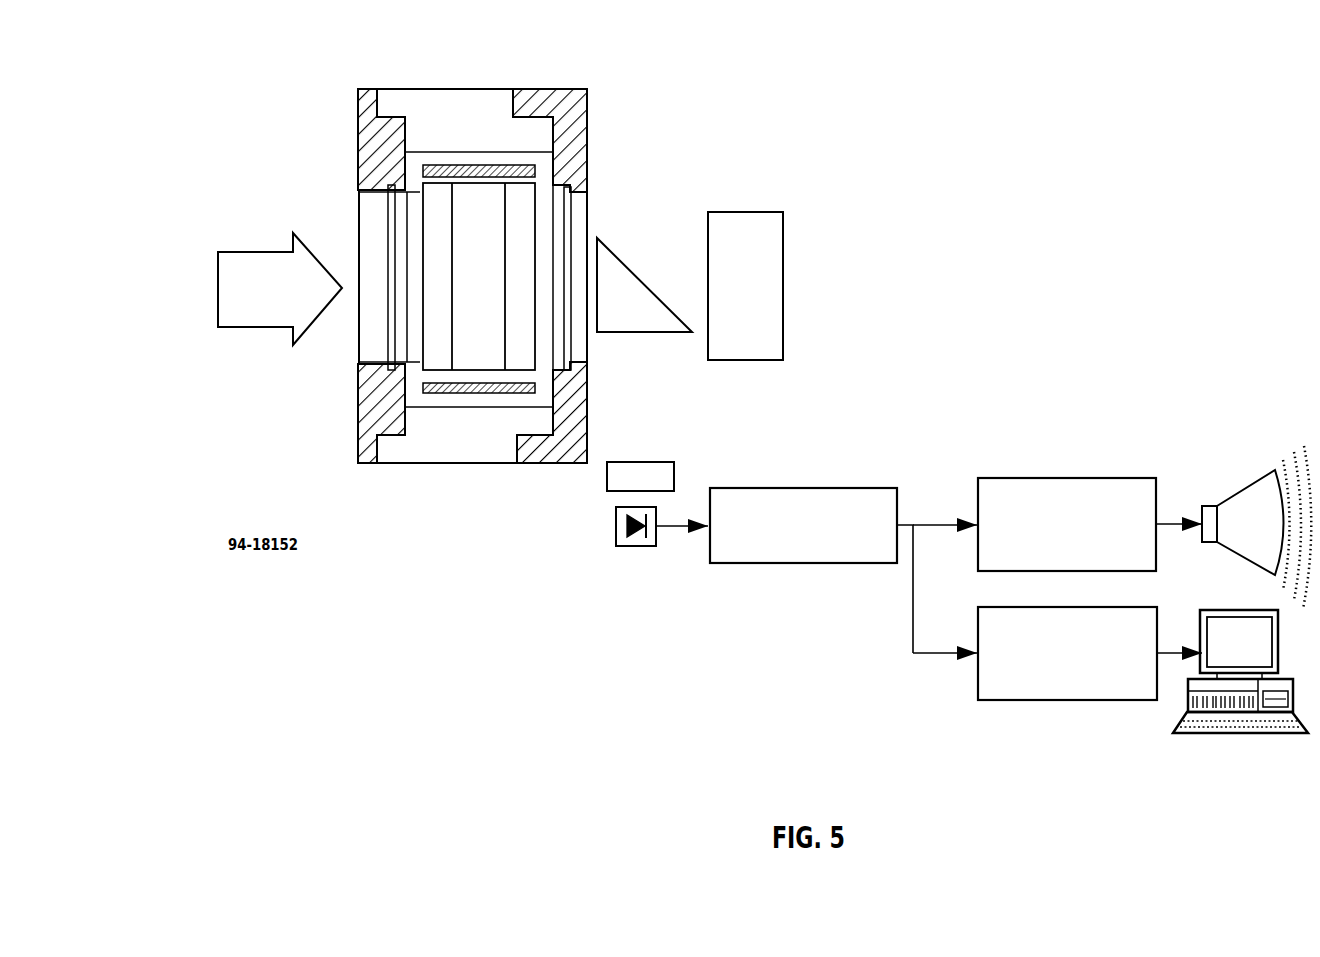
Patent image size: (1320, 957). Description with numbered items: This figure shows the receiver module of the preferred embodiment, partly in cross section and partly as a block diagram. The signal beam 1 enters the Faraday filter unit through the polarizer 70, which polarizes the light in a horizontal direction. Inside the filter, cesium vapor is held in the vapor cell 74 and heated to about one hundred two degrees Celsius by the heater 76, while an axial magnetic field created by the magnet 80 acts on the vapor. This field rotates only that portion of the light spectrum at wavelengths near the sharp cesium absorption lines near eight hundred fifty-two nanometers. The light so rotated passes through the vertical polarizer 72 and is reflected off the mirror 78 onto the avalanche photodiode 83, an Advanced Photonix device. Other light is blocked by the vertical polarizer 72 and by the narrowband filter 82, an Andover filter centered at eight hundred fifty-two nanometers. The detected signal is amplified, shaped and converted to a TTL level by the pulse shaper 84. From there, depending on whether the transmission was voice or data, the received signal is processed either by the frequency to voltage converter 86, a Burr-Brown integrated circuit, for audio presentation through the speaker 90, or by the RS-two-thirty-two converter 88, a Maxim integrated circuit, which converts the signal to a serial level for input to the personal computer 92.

The signal beam 1 is at (247, 252).
The polarizer 70 is at (380, 337).
The vertical polarizer 72 is at (568, 222).
The vapor cell 74 is at (395, 190).
The heater 76 is at (405, 165).
The mirror 78 is at (633, 278).
The magnet 80 is at (783, 268).
The narrowband filter 82 is at (674, 472).
The avalanche photodiode 83 is at (616, 526).
The pulse shaper 84 is at (795, 563).
The frequency to voltage converter 86 is at (1025, 478).
The RS-232 converter 88 is at (1092, 700).
The speaker 90 is at (1212, 506).
The personal computer 92 is at (1232, 735).